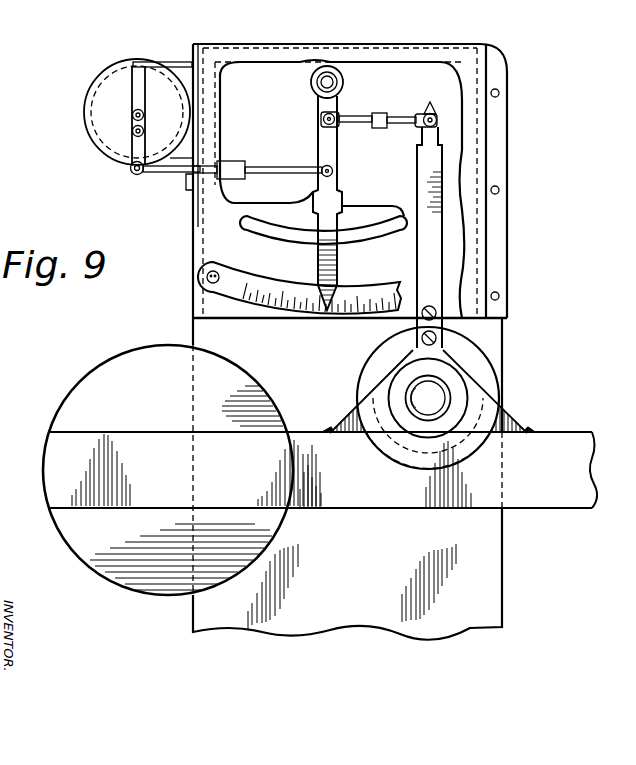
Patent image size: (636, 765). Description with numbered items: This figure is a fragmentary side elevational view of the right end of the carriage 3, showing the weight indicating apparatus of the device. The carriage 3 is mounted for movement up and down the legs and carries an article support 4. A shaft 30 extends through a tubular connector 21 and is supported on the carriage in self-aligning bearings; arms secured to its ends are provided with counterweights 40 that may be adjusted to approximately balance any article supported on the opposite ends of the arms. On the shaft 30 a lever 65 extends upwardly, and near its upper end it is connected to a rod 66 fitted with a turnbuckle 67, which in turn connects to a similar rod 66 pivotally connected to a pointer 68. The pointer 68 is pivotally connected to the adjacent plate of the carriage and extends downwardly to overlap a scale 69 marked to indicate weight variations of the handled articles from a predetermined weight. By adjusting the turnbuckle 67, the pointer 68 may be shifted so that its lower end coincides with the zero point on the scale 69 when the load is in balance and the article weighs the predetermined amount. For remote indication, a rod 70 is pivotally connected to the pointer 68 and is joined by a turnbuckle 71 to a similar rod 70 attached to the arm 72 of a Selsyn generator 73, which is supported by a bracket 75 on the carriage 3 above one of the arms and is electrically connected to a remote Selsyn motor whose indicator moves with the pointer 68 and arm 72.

The carriage 3 is at (542, 475).
The article support 4 is at (394, 515).
The tubular connector 21 is at (462, 398).
The shaft 30 is at (437, 390).
The counterweight 40 is at (115, 385).
The lever 65 is at (432, 250).
The rod 66 is at (345, 113).
The turnbuckle 67 is at (380, 113).
The pointer 68 is at (339, 146).
The scale 69 is at (273, 290).
The rod 70 is at (173, 175).
The turnbuckle 71 is at (237, 161).
The arm 72 is at (137, 145).
The Selsyn generator 73 is at (122, 85).
The bracket 75 is at (172, 62).